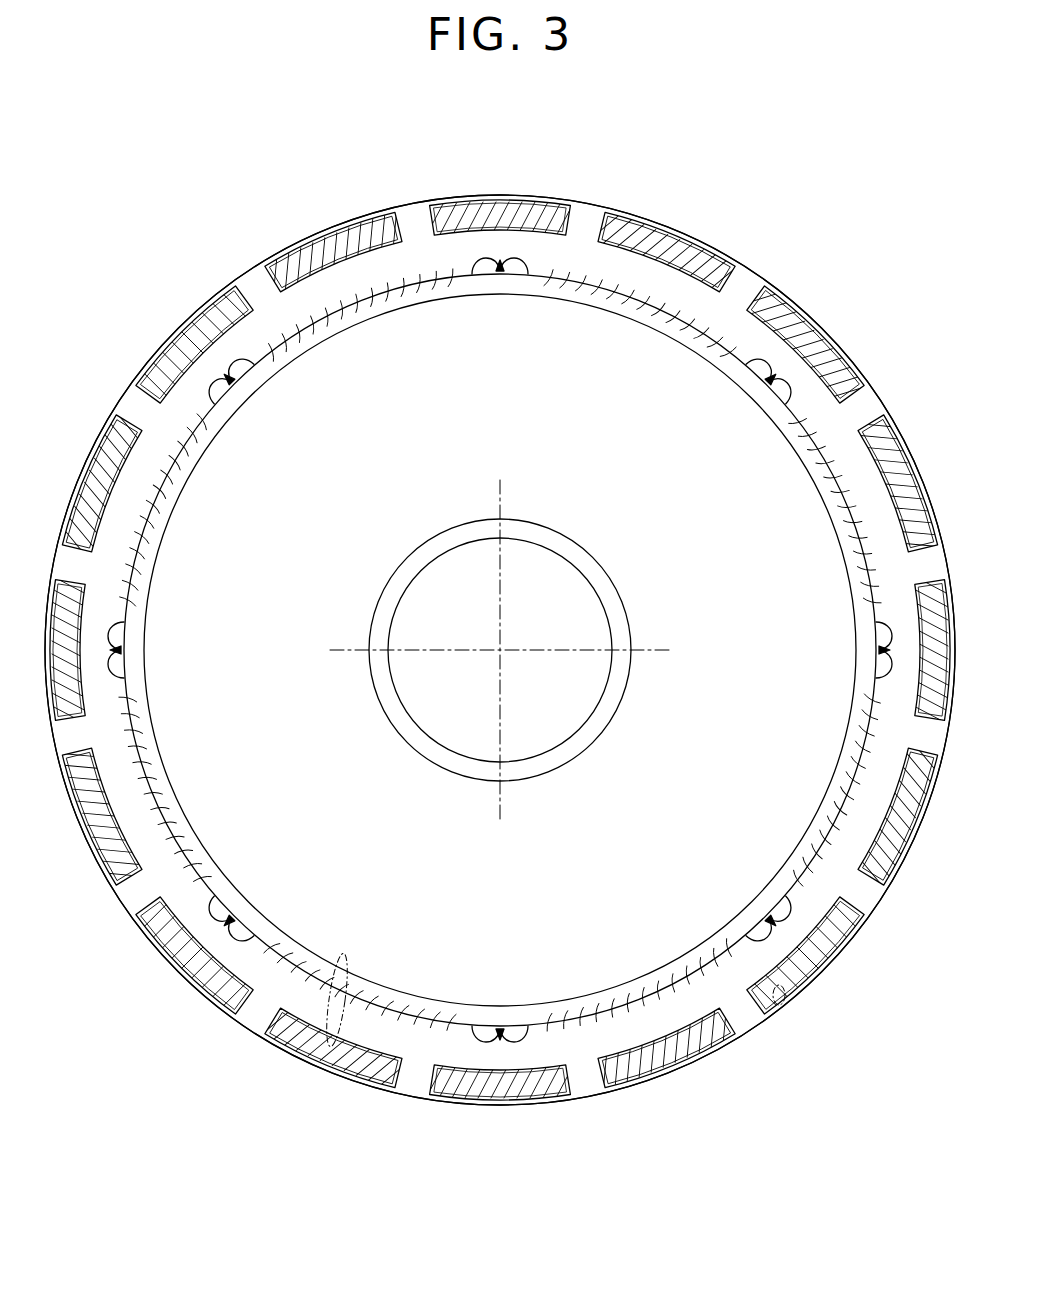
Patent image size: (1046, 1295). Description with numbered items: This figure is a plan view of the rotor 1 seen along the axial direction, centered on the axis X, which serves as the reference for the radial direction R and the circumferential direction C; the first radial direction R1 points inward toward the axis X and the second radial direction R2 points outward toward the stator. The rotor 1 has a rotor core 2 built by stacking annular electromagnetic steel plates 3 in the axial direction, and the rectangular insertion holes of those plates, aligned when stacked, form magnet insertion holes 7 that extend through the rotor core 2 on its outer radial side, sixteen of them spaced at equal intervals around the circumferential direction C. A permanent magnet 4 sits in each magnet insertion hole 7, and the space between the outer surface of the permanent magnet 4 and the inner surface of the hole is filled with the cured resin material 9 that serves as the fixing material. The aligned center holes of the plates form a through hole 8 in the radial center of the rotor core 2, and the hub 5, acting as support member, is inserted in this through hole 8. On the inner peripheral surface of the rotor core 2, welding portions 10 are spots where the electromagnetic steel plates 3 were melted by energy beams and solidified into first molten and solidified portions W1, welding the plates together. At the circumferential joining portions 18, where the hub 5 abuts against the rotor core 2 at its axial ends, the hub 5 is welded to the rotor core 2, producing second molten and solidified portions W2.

The rotor 1 is at (797, 194).
The rotor core 2 is at (640, 1092).
The electromagnetic steel plate 3 is at (400, 212).
The permanent magnet 4 is at (613, 210).
The hub 5 is at (722, 407).
The magnet insertion hole 7 is at (270, 258).
The through hole 8 is at (334, 1047).
The resin material 9 is at (402, 222).
The welding portion 10 is at (519, 268).
The joining portion 18 is at (345, 333).
The first molten and solidified portion W1 is at (495, 273).
The second molten and solidified portion W2 is at (272, 278).
The radial direction R is at (690, 218).
The first radial direction R1 is at (695, 178).
The second radial direction R2 is at (695, 176).
The circumferential direction C is at (393, 184).
The axis X is at (500, 651).